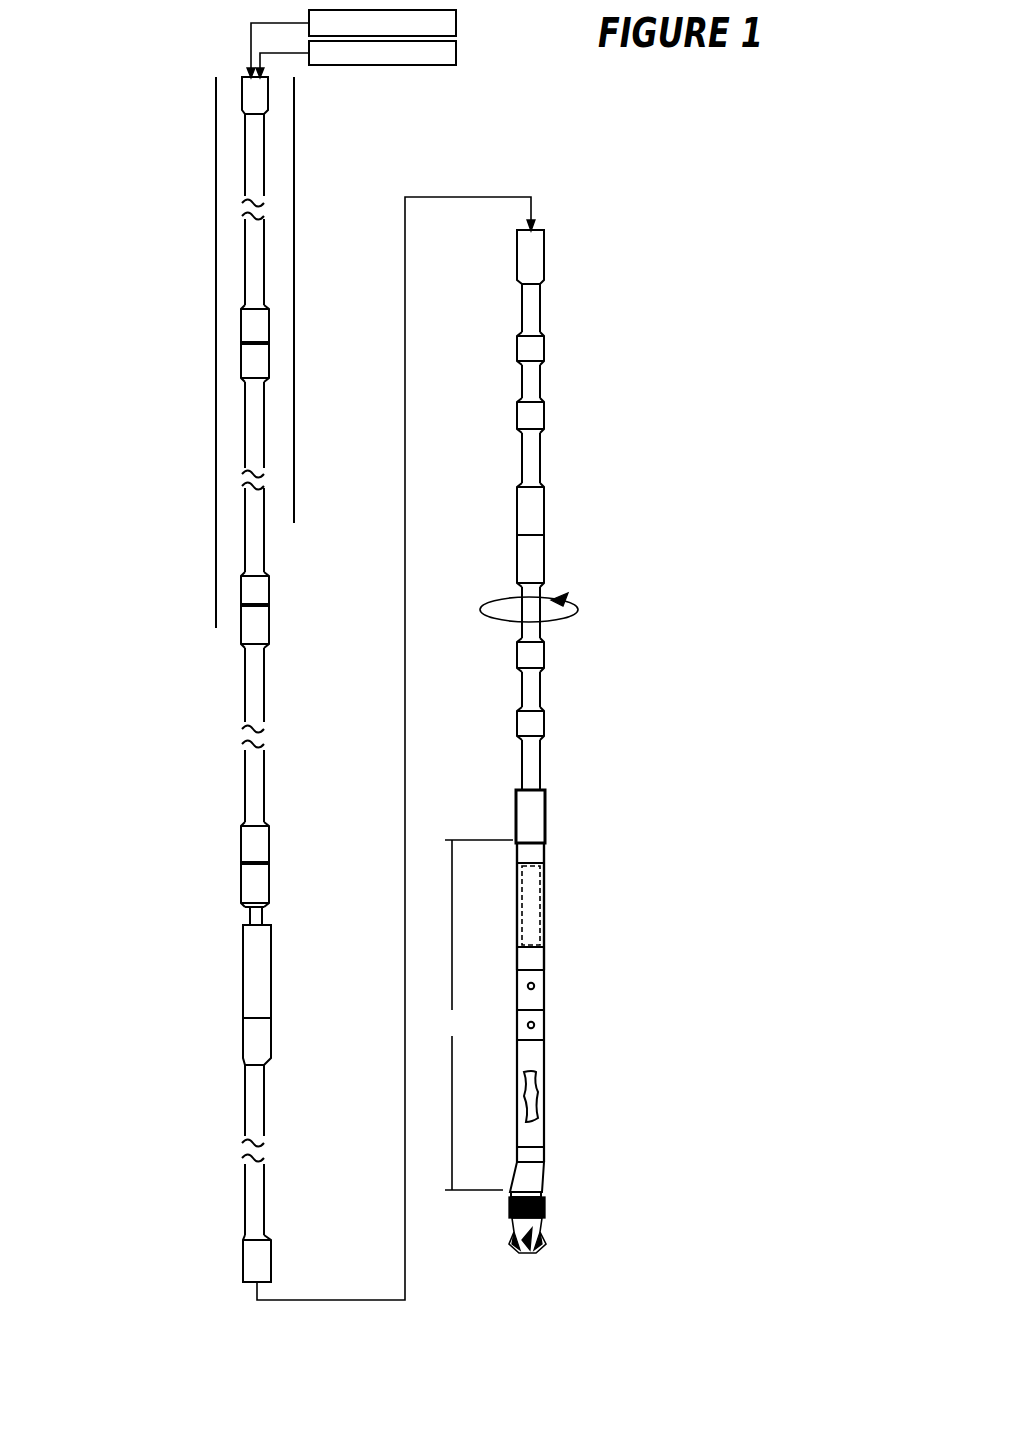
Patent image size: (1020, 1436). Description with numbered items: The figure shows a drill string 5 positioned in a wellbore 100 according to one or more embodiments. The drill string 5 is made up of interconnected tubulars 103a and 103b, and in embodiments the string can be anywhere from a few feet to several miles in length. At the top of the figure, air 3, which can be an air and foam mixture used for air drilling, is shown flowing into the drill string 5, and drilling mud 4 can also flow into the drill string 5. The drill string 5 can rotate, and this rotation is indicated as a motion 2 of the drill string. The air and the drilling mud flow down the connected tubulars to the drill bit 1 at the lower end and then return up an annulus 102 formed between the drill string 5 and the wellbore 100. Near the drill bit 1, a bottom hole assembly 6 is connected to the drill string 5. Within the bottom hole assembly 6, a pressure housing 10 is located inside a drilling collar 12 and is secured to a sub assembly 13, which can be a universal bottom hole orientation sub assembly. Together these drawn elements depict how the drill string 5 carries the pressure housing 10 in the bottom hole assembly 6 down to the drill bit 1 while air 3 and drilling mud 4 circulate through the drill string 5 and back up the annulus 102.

The drill bit 1 is at (544, 1238).
The motion of the drill string 2 is at (575, 615).
The air 3 is at (463, 17).
The drilling mud 4 is at (463, 47).
The drill string 5 is at (332, 677).
The bottom hole assembly 6 is at (515, 1025).
The pressure housing 10 is at (523, 902).
The drilling collar 12 is at (533, 906).
The sub assembly 13 is at (545, 992).
The wellbore 100 is at (294, 212).
The annulus 102 is at (267, 668).
The tubular 103a is at (265, 155).
The tubular 103b is at (265, 430).